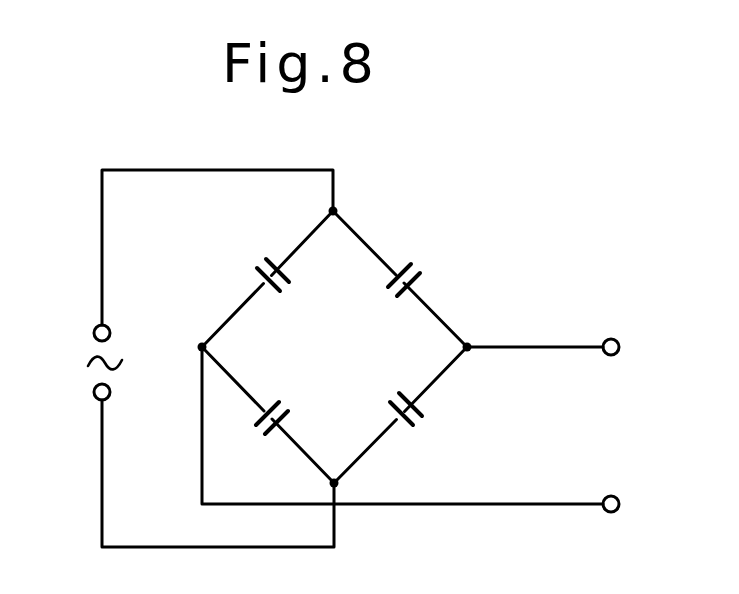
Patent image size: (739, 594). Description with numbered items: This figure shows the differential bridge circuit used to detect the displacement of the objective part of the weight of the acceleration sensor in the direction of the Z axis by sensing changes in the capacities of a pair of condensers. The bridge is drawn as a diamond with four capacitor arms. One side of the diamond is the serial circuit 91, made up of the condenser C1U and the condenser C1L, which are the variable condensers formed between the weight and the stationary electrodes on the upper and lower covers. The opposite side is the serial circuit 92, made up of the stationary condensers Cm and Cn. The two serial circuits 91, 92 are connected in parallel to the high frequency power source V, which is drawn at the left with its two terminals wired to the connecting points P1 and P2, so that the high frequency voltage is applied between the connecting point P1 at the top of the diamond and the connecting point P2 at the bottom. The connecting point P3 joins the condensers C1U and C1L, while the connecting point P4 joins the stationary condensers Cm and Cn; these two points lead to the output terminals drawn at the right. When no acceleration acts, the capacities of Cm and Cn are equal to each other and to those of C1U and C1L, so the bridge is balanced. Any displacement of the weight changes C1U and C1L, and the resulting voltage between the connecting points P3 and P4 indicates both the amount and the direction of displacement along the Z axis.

The serial circuit of condensers C1u and C1L 91 is at (241, 279).
The serial circuit of stationary condensers Cm and Cn 92 is at (420, 275).
The connecting point P1 is at (333, 211).
The connecting point P2 is at (334, 483).
The connecting point P3 is at (202, 347).
The connecting point P4 is at (467, 347).
The stationary condenser Cm is at (416, 262).
The stationary condenser Cn is at (412, 428).
The condenser C1U is at (252, 262).
The condenser C1L is at (252, 428).
The high frequency power source V is at (195, 358).